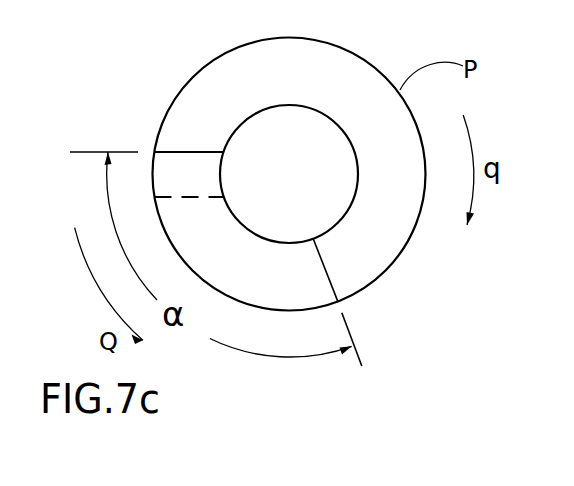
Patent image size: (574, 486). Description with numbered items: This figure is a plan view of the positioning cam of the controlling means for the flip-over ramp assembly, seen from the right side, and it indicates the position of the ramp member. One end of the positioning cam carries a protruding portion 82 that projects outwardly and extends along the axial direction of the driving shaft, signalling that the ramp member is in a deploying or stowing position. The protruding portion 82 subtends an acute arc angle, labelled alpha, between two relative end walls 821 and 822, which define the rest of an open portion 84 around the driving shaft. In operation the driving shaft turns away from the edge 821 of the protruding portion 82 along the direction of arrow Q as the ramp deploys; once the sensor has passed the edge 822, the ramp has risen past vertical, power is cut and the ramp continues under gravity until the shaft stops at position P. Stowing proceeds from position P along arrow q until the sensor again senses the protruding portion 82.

The protruding portion 82 is at (232, 272).
The open portion 84 is at (358, 65).
The end wall 821 is at (188, 152).
The end wall 822 is at (329, 282).